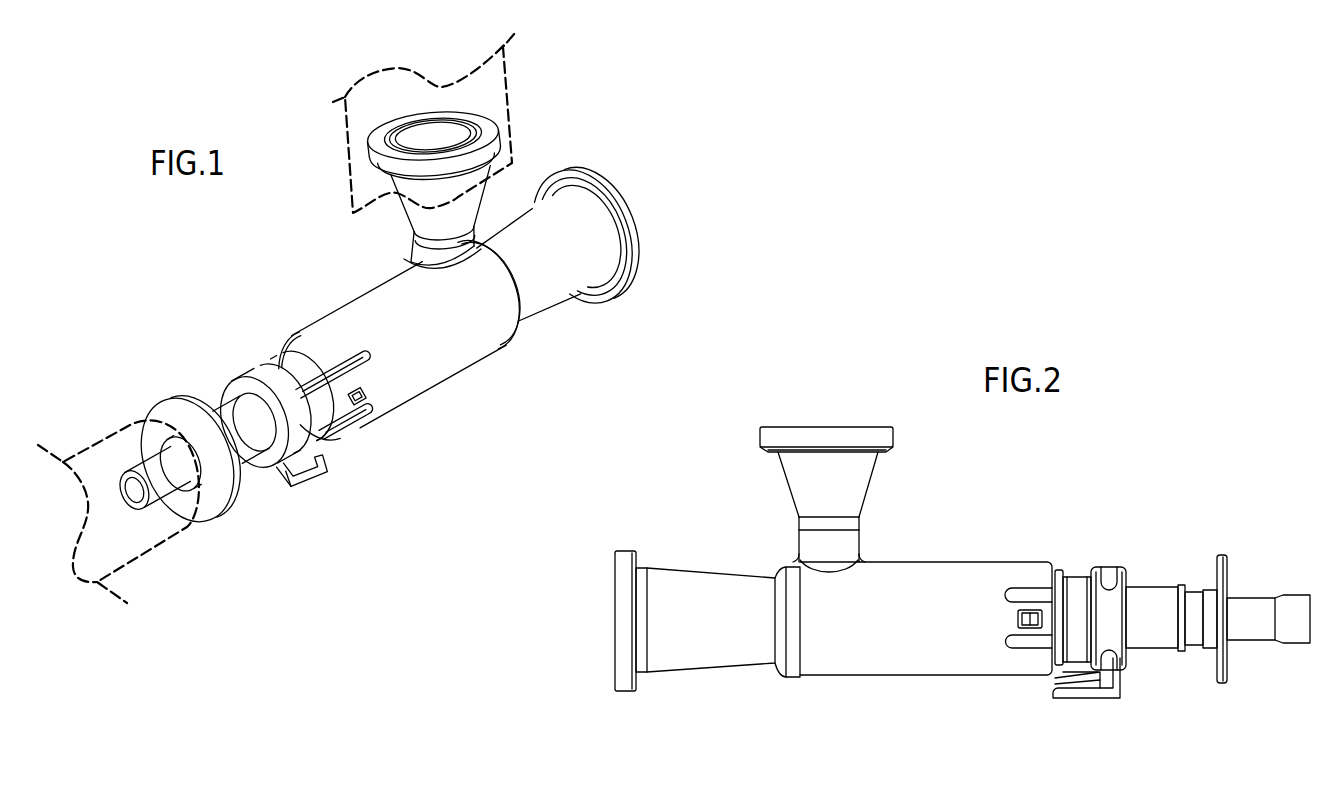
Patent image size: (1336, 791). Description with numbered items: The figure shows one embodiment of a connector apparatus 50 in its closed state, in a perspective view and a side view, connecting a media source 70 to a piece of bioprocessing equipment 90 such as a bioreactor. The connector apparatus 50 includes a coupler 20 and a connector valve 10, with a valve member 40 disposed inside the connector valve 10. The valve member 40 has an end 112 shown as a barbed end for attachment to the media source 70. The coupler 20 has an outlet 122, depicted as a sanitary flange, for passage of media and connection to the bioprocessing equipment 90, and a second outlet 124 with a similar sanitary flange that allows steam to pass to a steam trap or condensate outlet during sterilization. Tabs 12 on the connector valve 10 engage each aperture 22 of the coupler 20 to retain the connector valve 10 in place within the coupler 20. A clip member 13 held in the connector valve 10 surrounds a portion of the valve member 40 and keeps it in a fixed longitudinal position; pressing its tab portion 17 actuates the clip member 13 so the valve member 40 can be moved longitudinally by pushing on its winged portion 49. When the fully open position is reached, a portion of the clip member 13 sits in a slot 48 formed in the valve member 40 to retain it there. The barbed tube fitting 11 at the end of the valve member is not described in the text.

In FIG. 1, the connector valve 10 is at (320, 415).
In FIG. 2, the connector valve 10 is at (1077, 578).
In FIG. 2, the barbed tube fitting 11 is at (1293, 600).
In FIG. 2, the tabs 12 is at (1030, 625).
In FIG. 1, the clip member 13 is at (300, 480).
In FIG. 2, the clip member 13 is at (1108, 572).
In FIG. 2, the tab portion 17 is at (1090, 700).
In FIG. 1, the coupler 20 is at (548, 300).
In FIG. 2, the coupler 20 is at (832, 668).
In FIG. 1, the aperture 22 is at (365, 397).
In FIG. 1, the valve member 40 is at (238, 410).
In FIG. 2, the valve member 40 is at (1153, 600).
In FIG. 2, the slot 48 is at (1195, 595).
In FIG. 1, the winged portion 49 is at (162, 415).
In FIG. 2, the winged portion 49 is at (1222, 685).
In FIG. 1, the connector apparatus 50 is at (288, 255).
In FIG. 2, the connector apparatus 50 is at (1040, 478).
In FIG. 1, the media source 70 is at (88, 445).
In FIG. 1, the bioprocessing equipment 90 is at (517, 112).
In FIG. 1, the end 112 is at (132, 500).
In FIG. 1, the outlet 122 is at (420, 135).
In FIG. 2, the outlet 122 is at (843, 435).
In FIG. 1, the second outlet 124 is at (610, 192).
In FIG. 2, the second outlet 124 is at (627, 617).